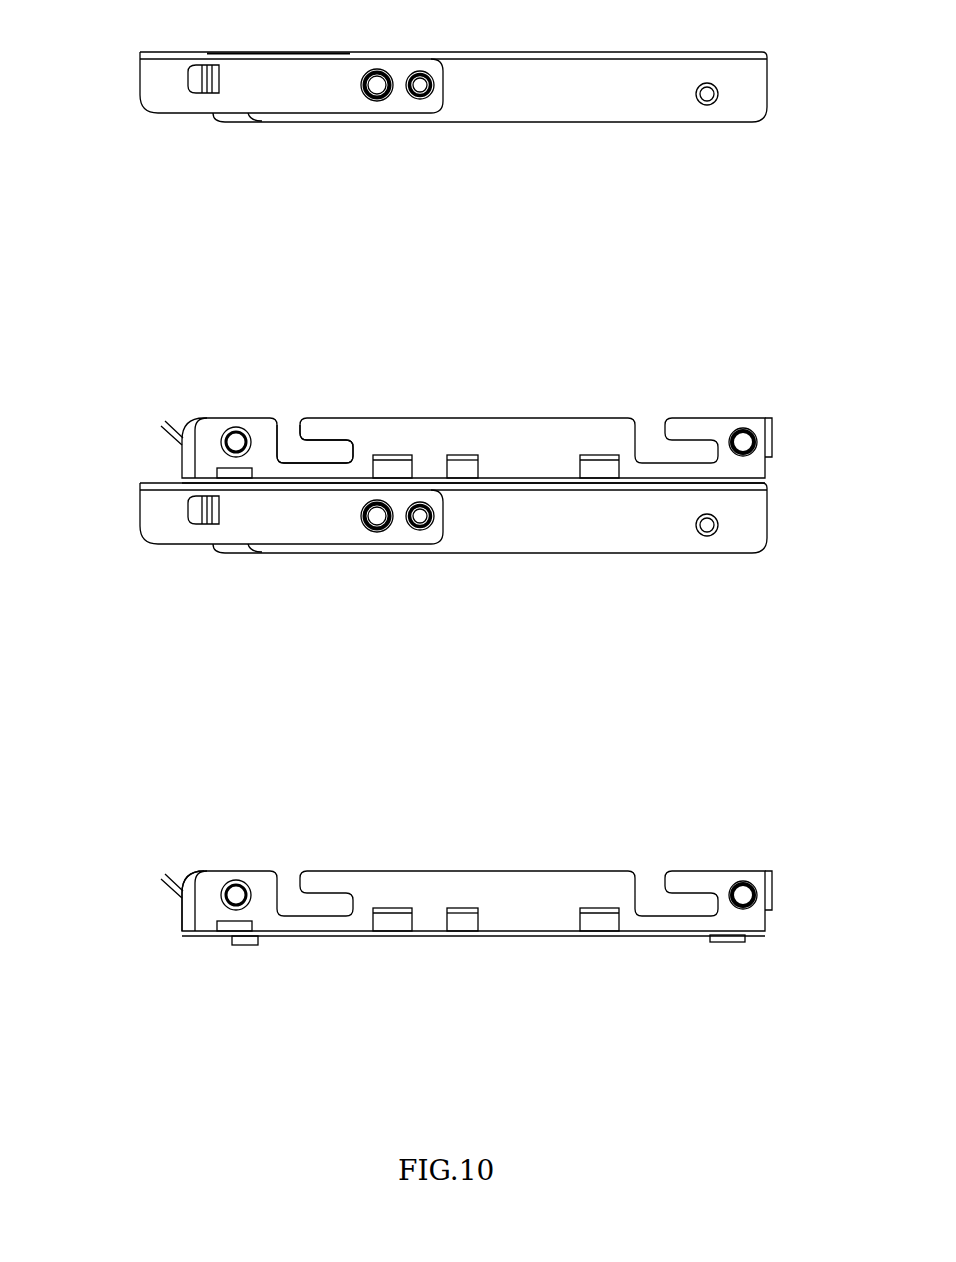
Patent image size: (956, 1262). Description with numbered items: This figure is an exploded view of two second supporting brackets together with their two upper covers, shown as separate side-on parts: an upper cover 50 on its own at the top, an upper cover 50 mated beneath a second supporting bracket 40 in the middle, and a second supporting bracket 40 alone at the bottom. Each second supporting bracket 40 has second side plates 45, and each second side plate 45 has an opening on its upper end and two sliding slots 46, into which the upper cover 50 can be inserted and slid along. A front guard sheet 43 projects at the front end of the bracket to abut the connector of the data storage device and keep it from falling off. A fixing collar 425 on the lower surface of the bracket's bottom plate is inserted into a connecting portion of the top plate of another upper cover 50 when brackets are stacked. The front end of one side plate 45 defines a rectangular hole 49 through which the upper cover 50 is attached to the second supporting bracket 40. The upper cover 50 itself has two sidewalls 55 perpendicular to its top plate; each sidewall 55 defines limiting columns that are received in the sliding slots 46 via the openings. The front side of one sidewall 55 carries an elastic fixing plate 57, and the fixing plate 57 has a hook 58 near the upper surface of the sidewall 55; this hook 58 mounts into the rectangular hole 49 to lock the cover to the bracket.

The second supporting bracket 40 is at (239, 906).
The front guard sheet 43 is at (175, 902).
The second side plate 45 is at (530, 440).
The sliding slot 46 is at (337, 455).
The rectangular hole 49 is at (217, 923).
The fixing collar 425 is at (247, 945).
The upper cover 50 is at (417, 107).
The sidewall 55 is at (583, 97).
The elastic fixing plate 57 is at (315, 85).
The hook 58 is at (207, 80).